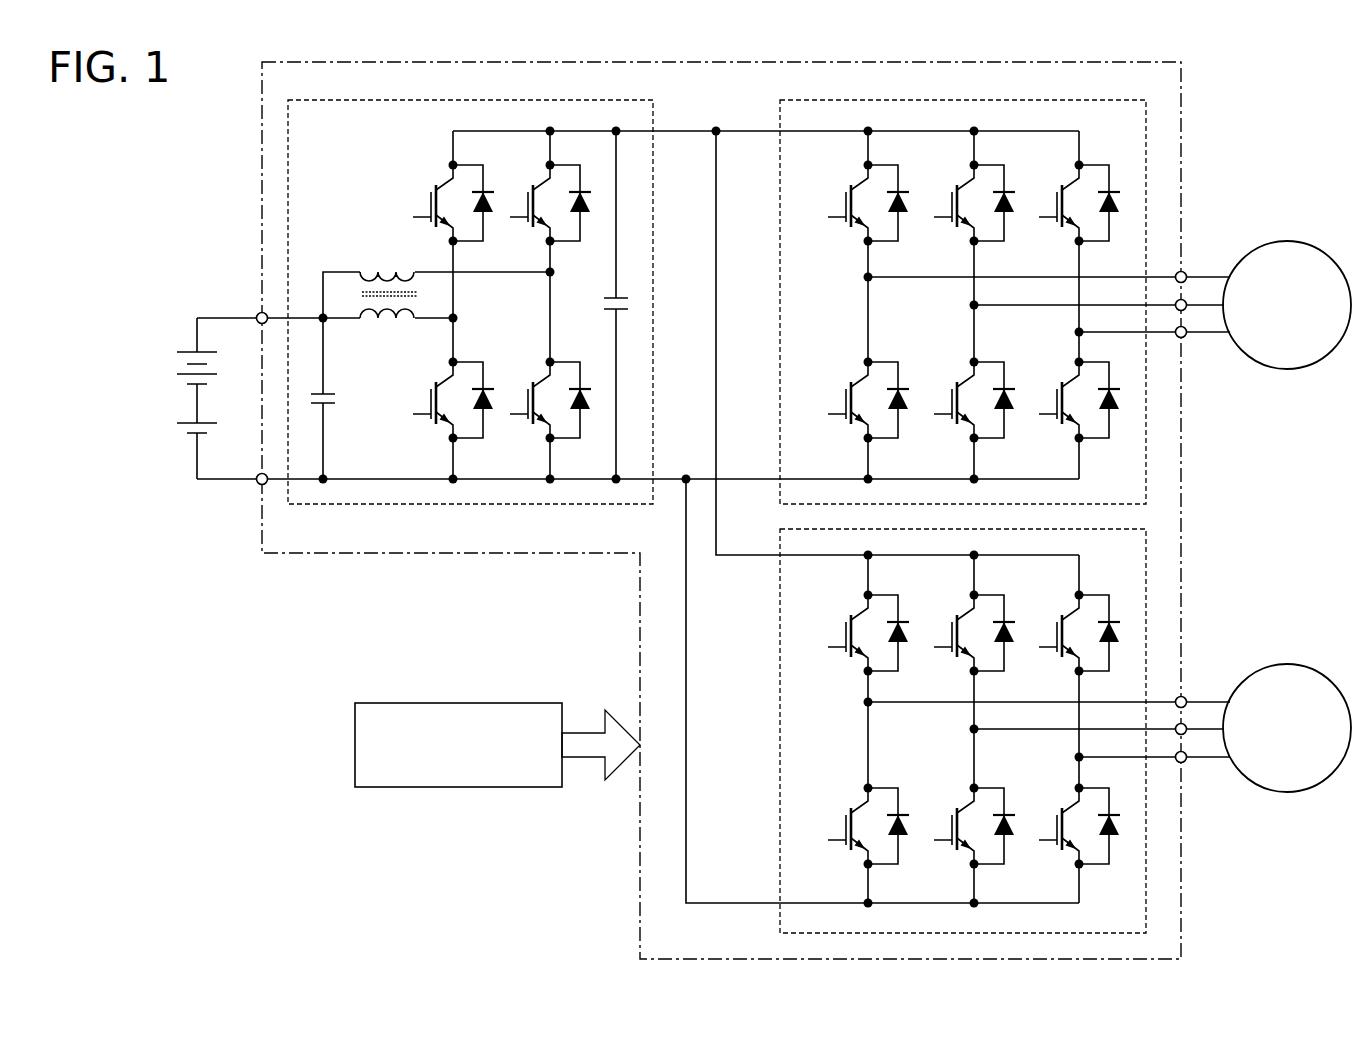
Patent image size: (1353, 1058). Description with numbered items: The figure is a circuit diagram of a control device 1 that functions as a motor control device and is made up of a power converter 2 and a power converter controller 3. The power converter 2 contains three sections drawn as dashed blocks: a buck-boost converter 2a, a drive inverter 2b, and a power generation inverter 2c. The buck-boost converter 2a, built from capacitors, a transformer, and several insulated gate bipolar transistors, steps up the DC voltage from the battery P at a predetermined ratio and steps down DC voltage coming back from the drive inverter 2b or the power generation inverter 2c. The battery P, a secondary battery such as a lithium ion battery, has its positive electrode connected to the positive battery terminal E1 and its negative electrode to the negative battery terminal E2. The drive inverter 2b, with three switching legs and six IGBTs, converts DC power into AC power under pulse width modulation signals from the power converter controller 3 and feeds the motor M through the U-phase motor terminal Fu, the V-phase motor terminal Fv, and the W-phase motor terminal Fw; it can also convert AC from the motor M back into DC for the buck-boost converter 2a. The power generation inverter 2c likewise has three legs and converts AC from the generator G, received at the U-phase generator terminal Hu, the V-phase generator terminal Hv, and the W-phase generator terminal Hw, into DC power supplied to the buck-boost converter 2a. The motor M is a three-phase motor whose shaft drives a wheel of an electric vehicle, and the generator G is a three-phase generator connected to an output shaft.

The control device 1 is at (249, 131).
The power converter 2 is at (748, 516).
The buck-boost converter 2a is at (655, 298).
The drive inverter 2b is at (779, 333).
The power generation inverter 2c is at (779, 725).
The power converter controller 3 is at (352, 722).
The battery P is at (183, 342).
The positive battery terminal E1 is at (261, 312).
The negative battery terminal E2 is at (261, 485).
The U-phase motor terminal Fu is at (1183, 272).
The V-phase motor terminal Fv is at (1185, 310).
The W-phase motor terminal Fw is at (1184, 338).
The motor M is at (1283, 244).
The U-phase generator terminal Hu is at (1183, 697).
The V-phase generator terminal Hv is at (1185, 734).
The W-phase generator terminal Hw is at (1184, 763).
The generator G is at (1280, 668).